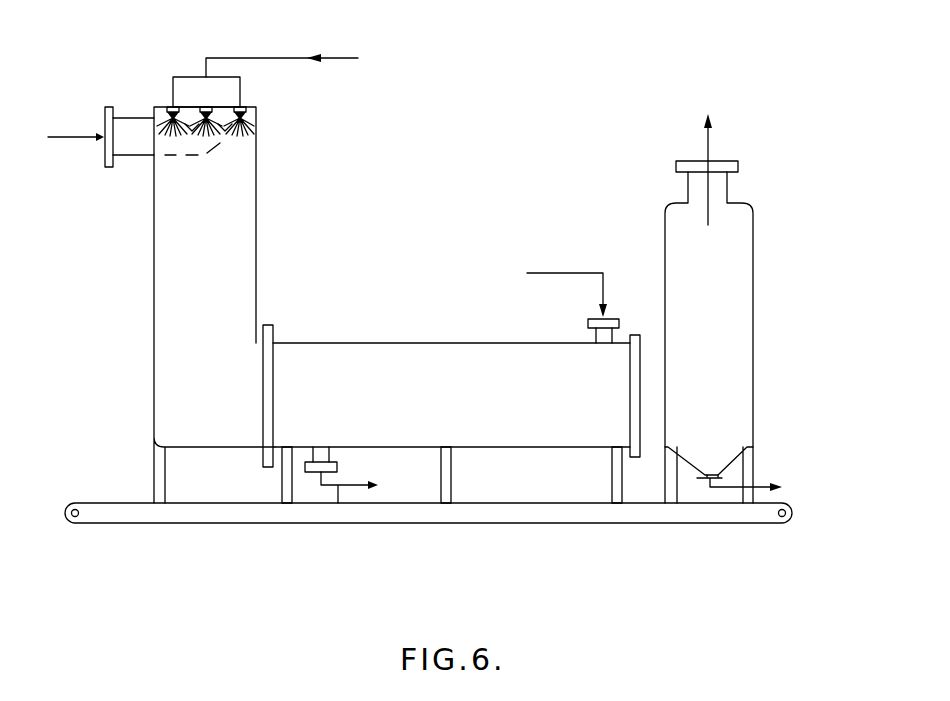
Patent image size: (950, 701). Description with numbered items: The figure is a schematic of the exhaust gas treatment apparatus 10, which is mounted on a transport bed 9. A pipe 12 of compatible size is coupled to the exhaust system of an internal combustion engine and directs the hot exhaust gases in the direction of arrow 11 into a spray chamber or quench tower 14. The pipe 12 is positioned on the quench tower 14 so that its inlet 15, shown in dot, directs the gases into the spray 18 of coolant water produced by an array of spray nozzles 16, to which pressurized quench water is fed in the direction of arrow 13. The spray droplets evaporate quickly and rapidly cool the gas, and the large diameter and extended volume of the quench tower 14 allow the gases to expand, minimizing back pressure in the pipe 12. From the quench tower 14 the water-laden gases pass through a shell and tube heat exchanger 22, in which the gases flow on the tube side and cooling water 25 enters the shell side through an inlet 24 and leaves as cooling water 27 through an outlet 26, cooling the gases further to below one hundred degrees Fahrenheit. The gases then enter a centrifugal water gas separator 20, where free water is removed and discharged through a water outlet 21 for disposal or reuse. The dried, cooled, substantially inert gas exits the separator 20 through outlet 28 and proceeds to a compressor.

The transport bed 9 is at (460, 511).
The apparatus 10 is at (330, 279).
The arrow 11 is at (68, 136).
The pipe 12 is at (120, 125).
The arrow 13 is at (340, 58).
The quench tower 14 is at (168, 324).
The inlet 15 is at (170, 166).
The spray nozzles 16 is at (258, 123).
The spray 18 is at (245, 142).
The centrifugal water gas separator 20 is at (750, 418).
The water outlet 21 is at (716, 488).
The shell and tube heat exchanger 22 is at (412, 352).
The inlet 24 is at (614, 337).
The cooling water 25 is at (601, 267).
The outlet 26 is at (316, 474).
The cooling water 27 is at (340, 492).
The outlet 28 is at (706, 142).